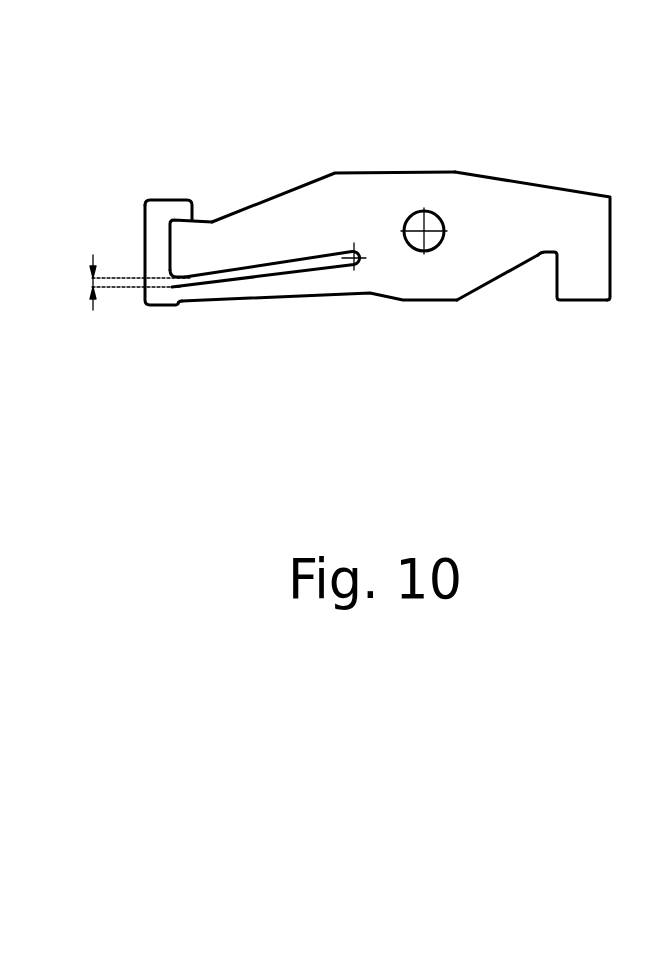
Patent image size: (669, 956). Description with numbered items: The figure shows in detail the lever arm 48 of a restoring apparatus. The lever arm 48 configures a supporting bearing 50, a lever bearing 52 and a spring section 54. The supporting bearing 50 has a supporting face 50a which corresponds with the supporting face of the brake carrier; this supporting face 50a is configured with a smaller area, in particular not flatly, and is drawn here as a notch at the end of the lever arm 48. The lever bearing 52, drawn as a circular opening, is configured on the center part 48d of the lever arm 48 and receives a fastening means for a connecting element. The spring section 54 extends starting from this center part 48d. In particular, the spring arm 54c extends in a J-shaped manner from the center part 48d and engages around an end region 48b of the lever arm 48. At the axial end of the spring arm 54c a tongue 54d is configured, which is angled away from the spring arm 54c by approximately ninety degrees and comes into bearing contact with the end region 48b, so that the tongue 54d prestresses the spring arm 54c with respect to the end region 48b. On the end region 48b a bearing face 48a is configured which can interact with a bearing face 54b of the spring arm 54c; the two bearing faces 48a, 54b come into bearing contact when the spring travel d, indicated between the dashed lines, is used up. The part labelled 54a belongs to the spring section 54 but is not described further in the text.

The lever arm 48 is at (346, 224).
The bearing face 48a is at (202, 272).
The end region 48b is at (207, 243).
The center part 48d is at (402, 283).
The supporting bearing 50 is at (590, 225).
The supporting face 50a is at (583, 302).
The lever bearing 52 is at (433, 212).
The spring section 54 is at (207, 316).
The base portion of spring element 54a is at (162, 308).
The bearing face 54b is at (217, 282).
The spring arm 54c is at (308, 288).
The tongue 54d is at (177, 213).
The spring travel d is at (92, 283).